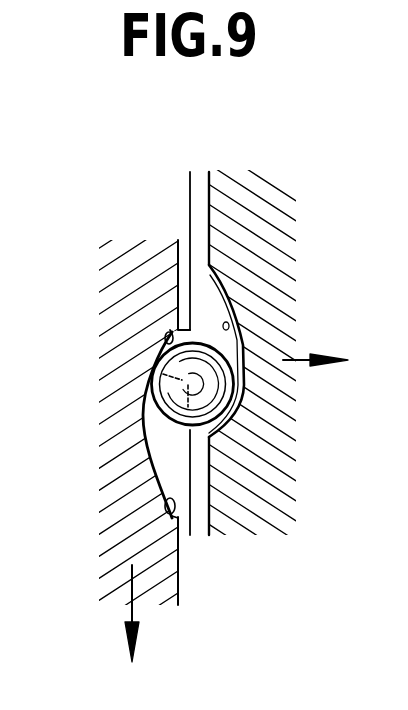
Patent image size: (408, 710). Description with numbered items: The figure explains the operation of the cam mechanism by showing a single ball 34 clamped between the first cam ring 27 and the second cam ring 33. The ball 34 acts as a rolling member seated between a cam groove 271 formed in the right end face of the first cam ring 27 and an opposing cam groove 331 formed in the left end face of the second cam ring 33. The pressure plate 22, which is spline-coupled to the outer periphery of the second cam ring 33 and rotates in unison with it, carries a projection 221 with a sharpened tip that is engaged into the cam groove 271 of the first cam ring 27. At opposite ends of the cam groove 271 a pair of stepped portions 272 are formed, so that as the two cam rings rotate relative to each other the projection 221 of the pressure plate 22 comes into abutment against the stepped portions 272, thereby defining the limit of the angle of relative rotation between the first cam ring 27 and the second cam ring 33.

The pressure plate 22 is at (188, 461).
The projection 221 is at (165, 345).
The first cam ring 27 is at (130, 252).
The cam groove 271 is at (146, 426).
The stepped portion 272 is at (90, 543).
The second cam ring 33 is at (257, 190).
The cam groove 331 is at (236, 349).
The ball 34 is at (205, 378).